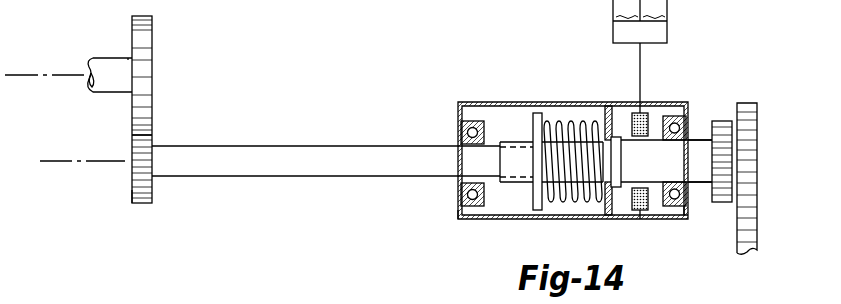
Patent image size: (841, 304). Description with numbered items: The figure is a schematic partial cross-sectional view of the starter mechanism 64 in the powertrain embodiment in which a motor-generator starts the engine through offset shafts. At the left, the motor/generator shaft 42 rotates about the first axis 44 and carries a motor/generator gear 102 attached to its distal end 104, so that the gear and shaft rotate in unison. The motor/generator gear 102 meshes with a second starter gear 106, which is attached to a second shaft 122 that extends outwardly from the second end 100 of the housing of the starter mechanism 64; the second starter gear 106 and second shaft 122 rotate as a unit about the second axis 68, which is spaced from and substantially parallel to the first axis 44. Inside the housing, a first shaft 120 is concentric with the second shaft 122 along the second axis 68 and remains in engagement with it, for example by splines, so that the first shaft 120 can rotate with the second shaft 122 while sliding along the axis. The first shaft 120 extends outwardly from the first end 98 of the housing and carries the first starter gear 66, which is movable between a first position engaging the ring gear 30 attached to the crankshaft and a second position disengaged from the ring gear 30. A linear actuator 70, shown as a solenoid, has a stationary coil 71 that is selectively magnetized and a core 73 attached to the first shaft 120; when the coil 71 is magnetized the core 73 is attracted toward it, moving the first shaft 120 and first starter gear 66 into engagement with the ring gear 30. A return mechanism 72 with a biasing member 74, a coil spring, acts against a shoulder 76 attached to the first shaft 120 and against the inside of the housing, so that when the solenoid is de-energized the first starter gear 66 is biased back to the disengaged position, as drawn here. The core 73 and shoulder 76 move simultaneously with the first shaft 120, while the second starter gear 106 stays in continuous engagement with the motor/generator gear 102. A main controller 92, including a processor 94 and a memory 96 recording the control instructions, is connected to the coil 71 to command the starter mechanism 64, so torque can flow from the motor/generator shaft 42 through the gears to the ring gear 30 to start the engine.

The ring gear 30 is at (757, 137).
The motor/generator shaft 42 is at (100, 86).
The first axis 44 is at (25, 73).
The starter mechanism 64 is at (521, 102).
The first starter gear 66 is at (722, 121).
The second axis 68 is at (60, 163).
The linear actuator 70 is at (658, 208).
The coil 71 is at (640, 219).
The return mechanism 72 is at (516, 199).
The core 73 is at (624, 161).
The biasing member 74 is at (569, 123).
The shoulder 76 is at (531, 210).
The main controller 92 is at (661, 21).
The processor 94 is at (628, 10).
The memory 96 is at (654, 9).
The first end 98 is at (688, 217).
The second end 100 is at (460, 213).
The motor/generator gear 102 is at (152, 42).
The distal end 104 is at (128, 58).
The second starter gear 106 is at (152, 192).
The first shaft 120 is at (706, 140).
The second shaft 122 is at (240, 146).